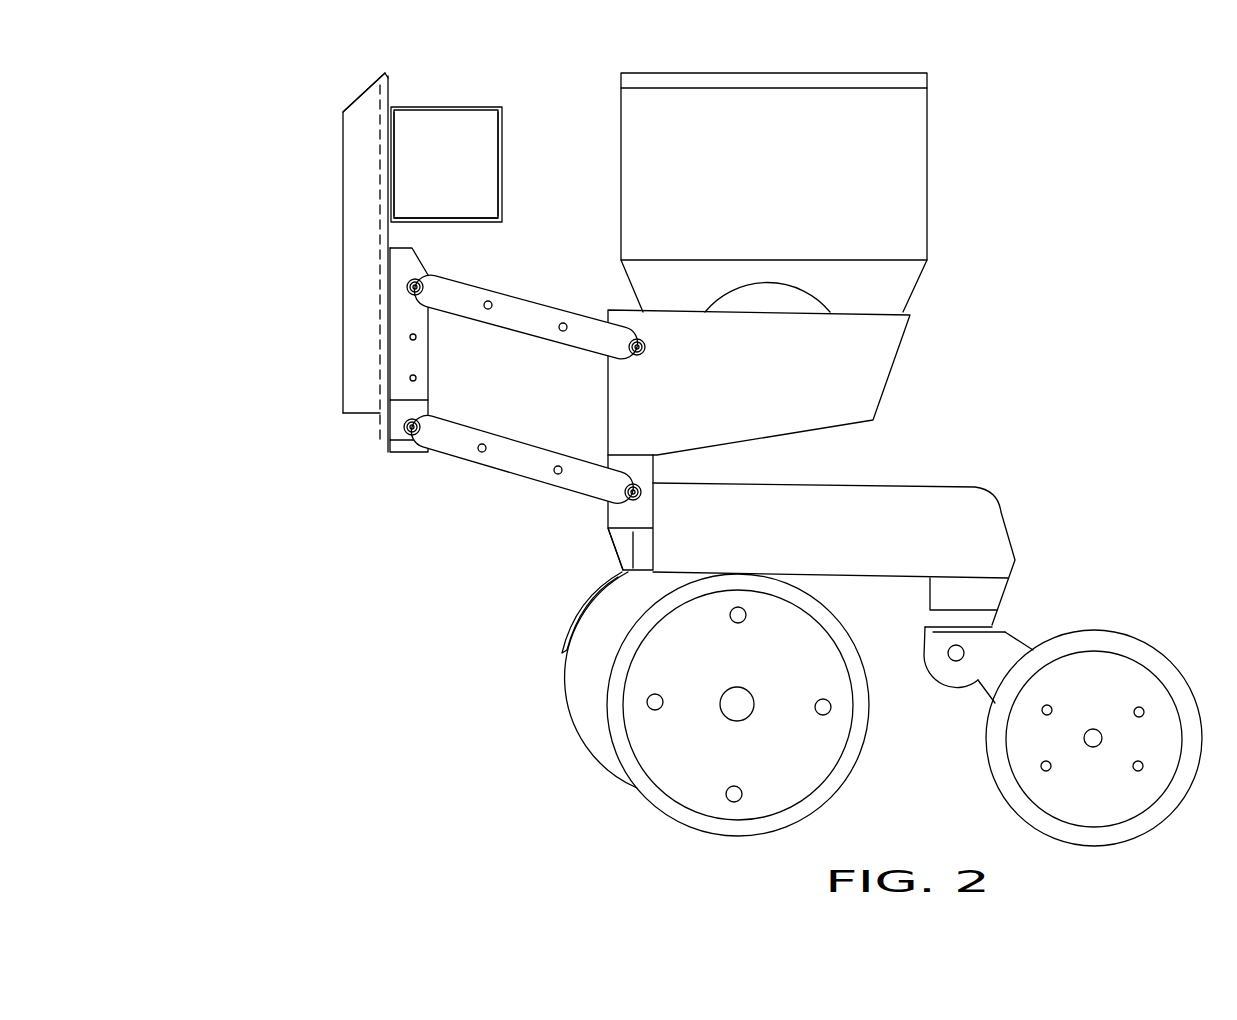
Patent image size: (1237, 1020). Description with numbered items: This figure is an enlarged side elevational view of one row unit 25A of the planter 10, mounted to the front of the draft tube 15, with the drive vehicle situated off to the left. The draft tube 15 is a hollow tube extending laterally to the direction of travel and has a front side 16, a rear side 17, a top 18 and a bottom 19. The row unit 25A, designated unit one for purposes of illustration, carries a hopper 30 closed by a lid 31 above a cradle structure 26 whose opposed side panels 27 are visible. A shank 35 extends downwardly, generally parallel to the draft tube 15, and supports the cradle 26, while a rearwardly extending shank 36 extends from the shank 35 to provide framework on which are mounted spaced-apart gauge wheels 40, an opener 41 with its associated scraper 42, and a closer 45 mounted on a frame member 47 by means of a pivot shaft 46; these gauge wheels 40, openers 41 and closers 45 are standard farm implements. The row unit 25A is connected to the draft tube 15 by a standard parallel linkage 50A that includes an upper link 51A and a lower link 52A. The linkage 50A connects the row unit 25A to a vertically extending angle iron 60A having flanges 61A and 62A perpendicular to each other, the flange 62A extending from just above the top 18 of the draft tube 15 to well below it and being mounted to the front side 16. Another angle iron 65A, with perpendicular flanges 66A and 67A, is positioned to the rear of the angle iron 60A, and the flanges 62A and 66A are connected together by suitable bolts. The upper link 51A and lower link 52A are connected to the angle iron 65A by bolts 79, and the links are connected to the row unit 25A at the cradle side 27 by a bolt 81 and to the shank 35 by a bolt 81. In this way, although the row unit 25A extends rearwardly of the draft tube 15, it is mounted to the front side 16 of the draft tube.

The planter 10 is at (232, 95).
The draft tube 15 is at (505, 100).
The front side 16 is at (395, 142).
The rear side 17 is at (502, 163).
The top 18 is at (428, 107).
The bottom 19 is at (485, 222).
The row unit 25A is at (948, 122).
The cradle structure 26 is at (897, 372).
The side panel 27 is at (782, 386).
The hopper 30 is at (928, 177).
The lid 31 is at (827, 82).
The shank 35 is at (628, 540).
The rearwardly extending shank 36 is at (988, 542).
The gauge wheel 40 is at (795, 637).
The opener 41 is at (592, 702).
The scraper 42 is at (565, 632).
The closer 45 is at (1118, 675).
The pivot shaft 46 is at (962, 652).
The frame member 47 is at (985, 682).
The parallel linkage 50A is at (519, 289).
The upper link 51A is at (527, 318).
The lower link 52A is at (510, 463).
The angle iron 60A is at (345, 172).
The flange 61A is at (350, 298).
The flange 62A is at (373, 375).
The angle iron 65A is at (429, 360).
The flange 66A is at (382, 437).
The flange 67A is at (417, 400).
The bolt 79 is at (420, 280).
The bolt 81 is at (648, 352).